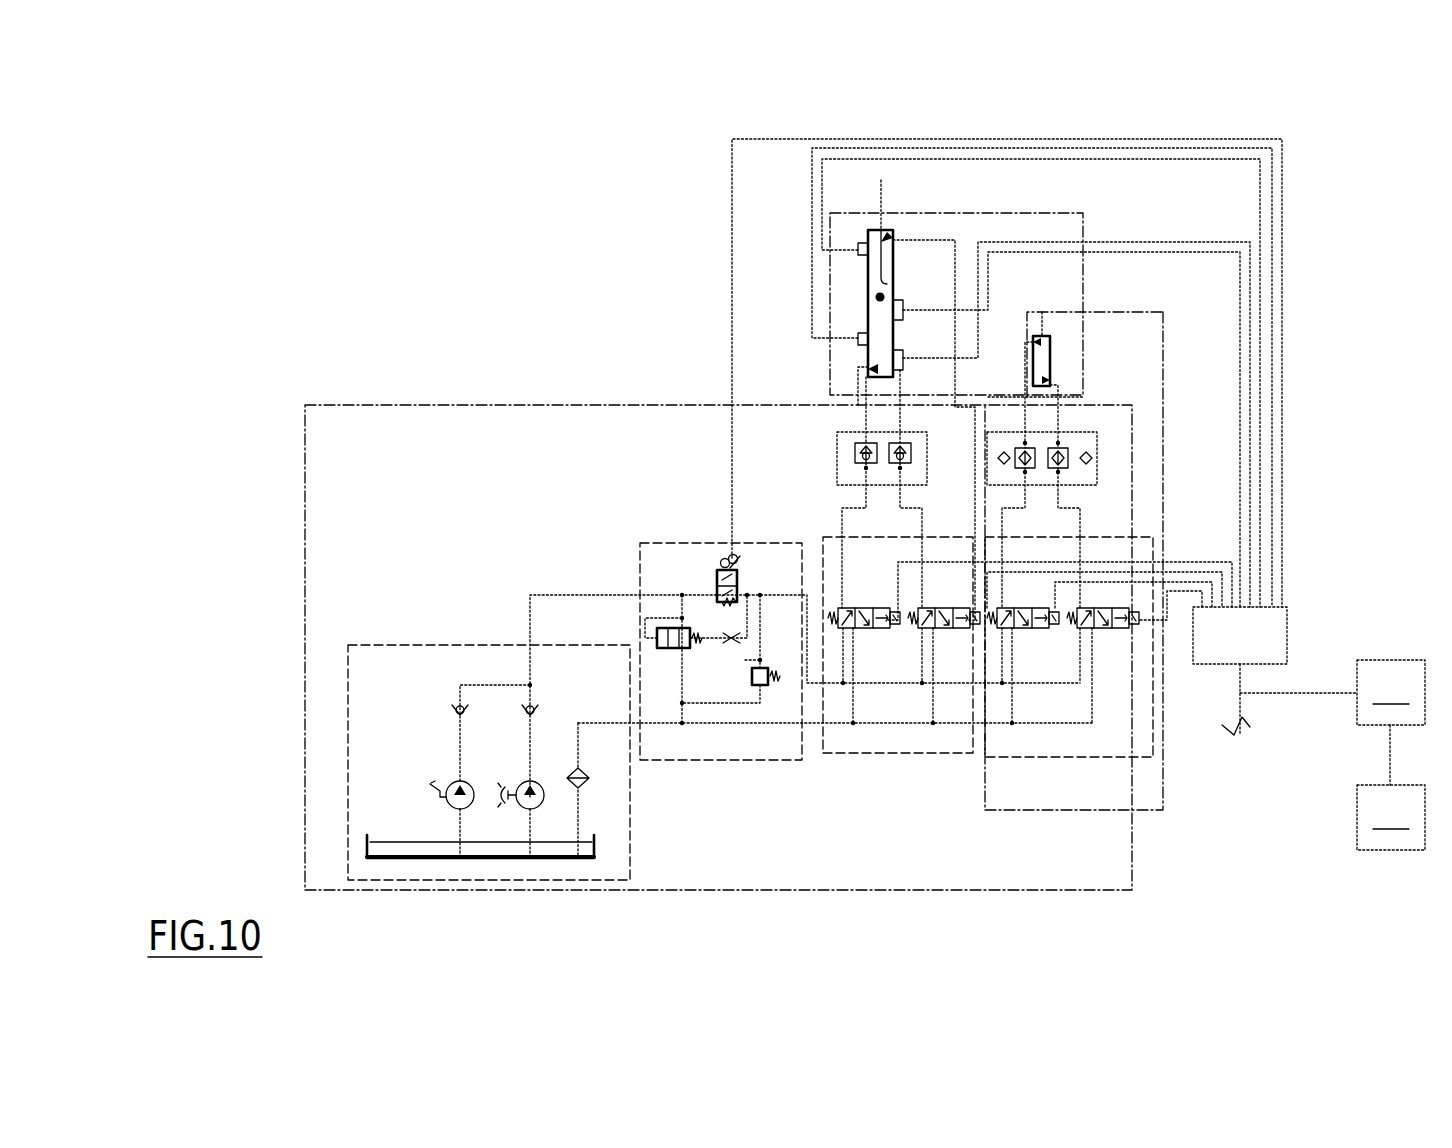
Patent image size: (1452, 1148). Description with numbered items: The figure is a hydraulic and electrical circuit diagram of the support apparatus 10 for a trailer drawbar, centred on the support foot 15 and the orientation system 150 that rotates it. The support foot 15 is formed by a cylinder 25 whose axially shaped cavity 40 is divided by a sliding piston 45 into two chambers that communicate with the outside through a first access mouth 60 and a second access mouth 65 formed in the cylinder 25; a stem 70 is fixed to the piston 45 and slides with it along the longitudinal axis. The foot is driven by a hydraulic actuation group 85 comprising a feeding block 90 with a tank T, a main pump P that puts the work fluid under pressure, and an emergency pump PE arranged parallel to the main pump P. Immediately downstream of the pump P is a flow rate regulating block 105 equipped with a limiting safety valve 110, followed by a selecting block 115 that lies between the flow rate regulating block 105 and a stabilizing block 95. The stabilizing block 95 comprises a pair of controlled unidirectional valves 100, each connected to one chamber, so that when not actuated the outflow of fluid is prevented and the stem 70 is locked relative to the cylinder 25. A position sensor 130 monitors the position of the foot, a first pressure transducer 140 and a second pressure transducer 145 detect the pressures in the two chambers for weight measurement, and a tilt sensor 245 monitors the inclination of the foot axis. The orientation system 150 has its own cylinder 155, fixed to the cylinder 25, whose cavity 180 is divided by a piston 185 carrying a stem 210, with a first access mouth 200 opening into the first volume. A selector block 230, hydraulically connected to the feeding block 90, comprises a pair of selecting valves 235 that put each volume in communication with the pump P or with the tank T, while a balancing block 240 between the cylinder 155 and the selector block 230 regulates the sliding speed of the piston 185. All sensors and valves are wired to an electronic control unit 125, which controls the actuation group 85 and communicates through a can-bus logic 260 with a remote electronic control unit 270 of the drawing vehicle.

The support apparatus 10 is at (370, 162).
The support foot 15 is at (830, 213).
The cylinder 25 is at (830, 332).
The cavity 40 is at (868, 290).
The piston 45 is at (893, 280).
The first access mouth 60 is at (895, 238).
The second access mouth 65 is at (868, 366).
The stem 70 is at (882, 193).
The actuation group 85 is at (337, 402).
The feeding block 90 is at (341, 772).
The stabilizing block 95 is at (836, 451).
The controlled unidirectional valves 100 is at (898, 466).
The flow rate regulating block 105 is at (735, 762).
The limiting safety valve 110 is at (770, 690).
The selecting block 115 is at (895, 762).
The electronic control unit 125 is at (1275, 671).
The position sensor 130 is at (903, 358).
The first pressure transducer 140 is at (858, 250).
The second pressure transducer 145 is at (858, 338).
The orientation system 150 is at (1163, 390).
The cylinder 155 is at (1050, 352).
The cavity 180 is at (875, 630).
The piston 185 is at (1050, 378).
The first access mouth 200 is at (1020, 320).
The stem 210 is at (1048, 340).
The selector block 230 is at (1035, 762).
The selecting valves 235 is at (1097, 630).
The balancing block 240 is at (1100, 485).
The tilt sensor 245 is at (995, 300).
The can-bus logic 260 is at (1391, 692).
The remote electronic control unit 270 is at (1391, 787).
The emergency pump PE is at (458, 808).
The pump P is at (522, 808).
The tank T is at (588, 860).